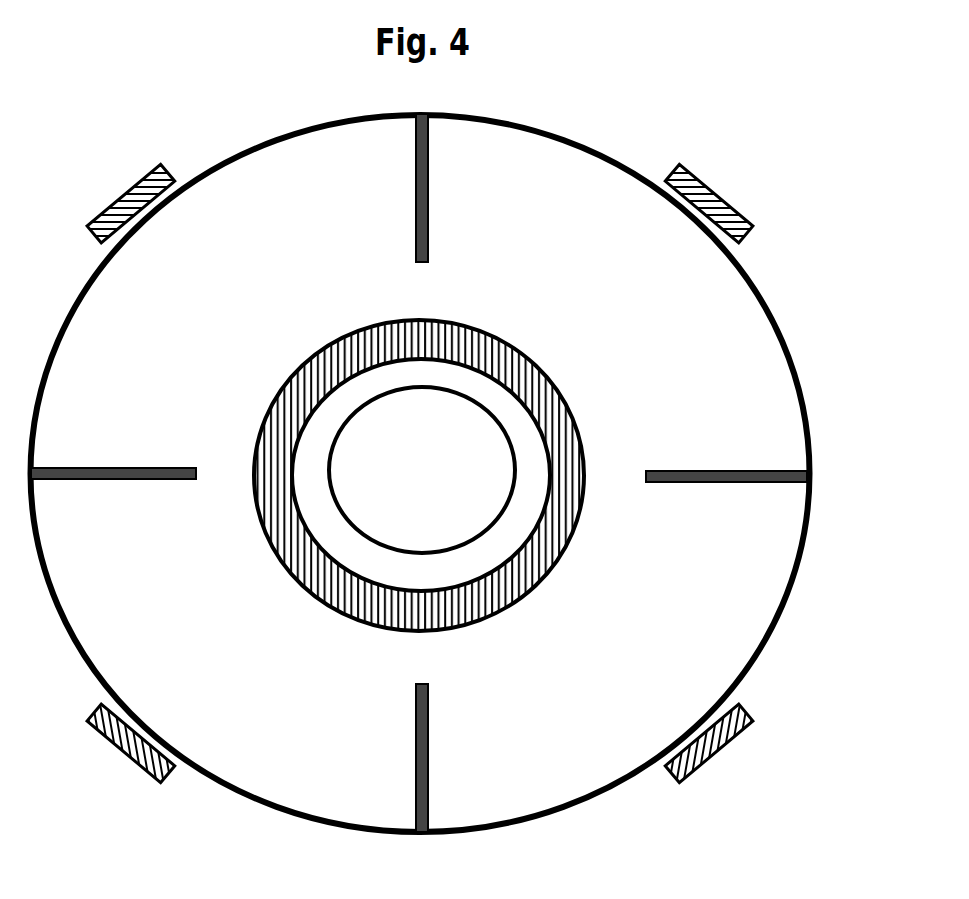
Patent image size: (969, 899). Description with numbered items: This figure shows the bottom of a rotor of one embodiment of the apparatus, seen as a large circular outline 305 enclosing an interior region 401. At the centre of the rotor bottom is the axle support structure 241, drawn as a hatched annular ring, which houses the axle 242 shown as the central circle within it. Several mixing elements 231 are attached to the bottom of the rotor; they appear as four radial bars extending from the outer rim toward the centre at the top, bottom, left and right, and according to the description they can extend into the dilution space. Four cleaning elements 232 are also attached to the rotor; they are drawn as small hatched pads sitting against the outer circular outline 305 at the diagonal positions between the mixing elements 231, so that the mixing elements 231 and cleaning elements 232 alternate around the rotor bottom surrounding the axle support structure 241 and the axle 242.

The housing 305 is at (800, 378).
The inner chamber 401 is at (420, 474).
The mixing elements 231 is at (430, 197).
The cleaning elements 232 is at (150, 197).
The axle support structure 241 is at (560, 384).
The axle 242 is at (422, 470).